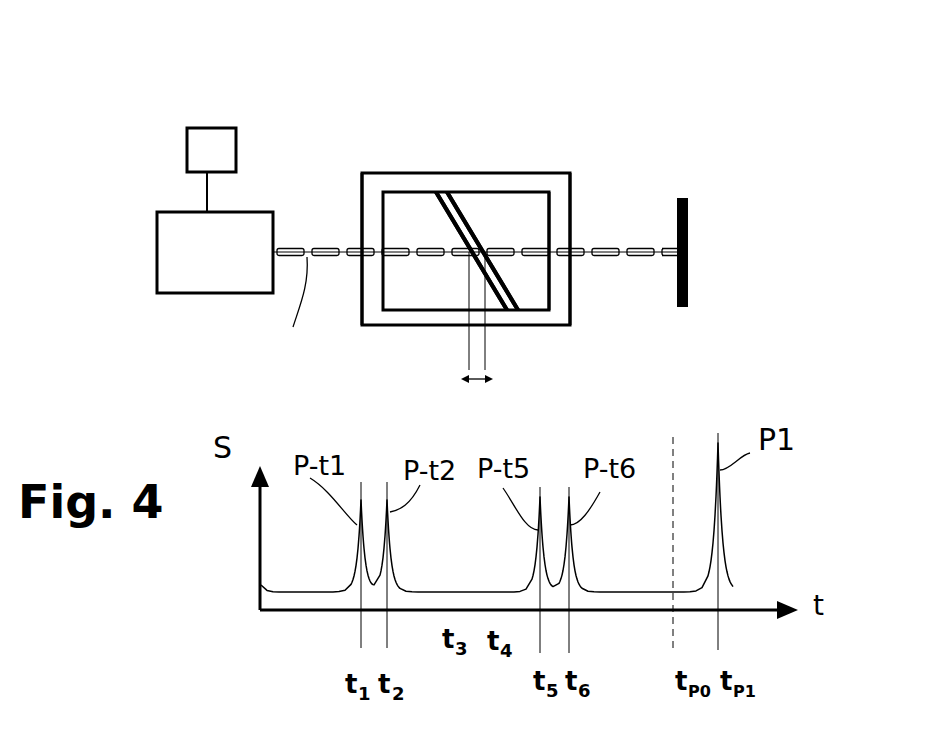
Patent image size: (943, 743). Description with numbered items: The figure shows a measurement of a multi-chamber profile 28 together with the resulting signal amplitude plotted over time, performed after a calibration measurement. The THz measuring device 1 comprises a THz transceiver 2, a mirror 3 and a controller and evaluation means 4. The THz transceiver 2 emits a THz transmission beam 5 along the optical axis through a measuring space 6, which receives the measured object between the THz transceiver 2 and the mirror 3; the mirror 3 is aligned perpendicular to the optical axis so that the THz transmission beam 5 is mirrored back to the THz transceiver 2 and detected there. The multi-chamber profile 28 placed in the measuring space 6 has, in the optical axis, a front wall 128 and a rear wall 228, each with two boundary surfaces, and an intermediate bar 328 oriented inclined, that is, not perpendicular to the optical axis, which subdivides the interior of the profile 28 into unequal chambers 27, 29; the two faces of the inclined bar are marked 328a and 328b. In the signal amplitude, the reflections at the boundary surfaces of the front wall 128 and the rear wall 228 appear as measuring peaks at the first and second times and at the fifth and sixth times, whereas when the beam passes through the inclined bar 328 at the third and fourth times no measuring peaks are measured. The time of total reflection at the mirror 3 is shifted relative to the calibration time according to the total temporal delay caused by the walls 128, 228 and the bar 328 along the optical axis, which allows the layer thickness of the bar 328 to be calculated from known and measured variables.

The THz measuring device 1 is at (200, 78).
The THz transceiver 2 is at (163, 293).
The mirror 3 is at (688, 220).
The controller and evaluation means 4 is at (236, 150).
The THz transmission beam 5 is at (290, 247).
The measuring space 6 is at (635, 232).
The chamber 27 is at (425, 288).
The multi-chamber profile 28 is at (566, 212).
The chamber 29 is at (535, 293).
The front wall 128 is at (373, 218).
The rear wall 228 is at (572, 200).
The intermediate bar 328 is at (475, 228).
The first surface of beam splitter plate 328a is at (448, 221).
The second surface of beam splitter plate 328b is at (480, 227).